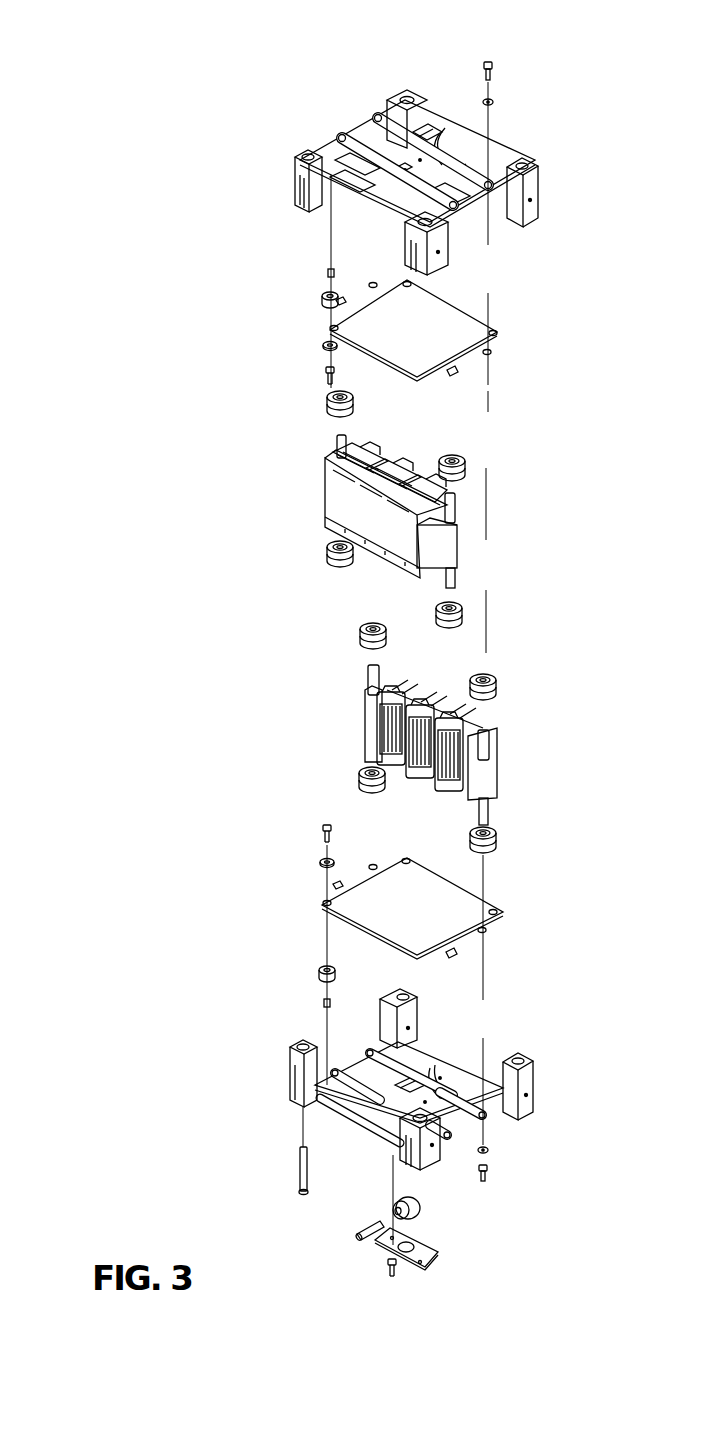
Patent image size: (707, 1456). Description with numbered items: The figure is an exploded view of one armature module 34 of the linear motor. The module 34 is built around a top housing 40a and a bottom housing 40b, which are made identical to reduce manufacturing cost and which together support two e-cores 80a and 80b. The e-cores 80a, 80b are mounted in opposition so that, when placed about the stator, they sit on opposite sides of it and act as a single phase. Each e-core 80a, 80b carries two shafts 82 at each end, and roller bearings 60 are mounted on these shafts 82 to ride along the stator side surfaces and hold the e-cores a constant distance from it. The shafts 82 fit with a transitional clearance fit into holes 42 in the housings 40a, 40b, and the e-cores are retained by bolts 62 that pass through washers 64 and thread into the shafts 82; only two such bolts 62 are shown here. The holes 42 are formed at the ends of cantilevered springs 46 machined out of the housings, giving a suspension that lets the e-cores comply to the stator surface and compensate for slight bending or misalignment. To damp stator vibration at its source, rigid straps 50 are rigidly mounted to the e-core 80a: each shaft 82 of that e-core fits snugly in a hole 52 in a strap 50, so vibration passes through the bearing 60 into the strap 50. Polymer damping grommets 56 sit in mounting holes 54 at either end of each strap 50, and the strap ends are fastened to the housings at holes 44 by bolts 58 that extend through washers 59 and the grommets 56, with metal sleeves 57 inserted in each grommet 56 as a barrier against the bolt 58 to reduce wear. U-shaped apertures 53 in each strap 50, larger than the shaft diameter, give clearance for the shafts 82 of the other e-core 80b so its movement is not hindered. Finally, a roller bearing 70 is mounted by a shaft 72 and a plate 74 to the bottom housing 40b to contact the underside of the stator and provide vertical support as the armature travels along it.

The armature module 34 is at (100, 83).
The top housing 40a is at (294, 166).
The bottom housing 40b is at (520, 1075).
The holes 42 is at (344, 134).
The holes 44 is at (408, 113).
The cantilevered springs 46 is at (440, 152).
The rigid straps 50 is at (371, 306).
The hole 52 is at (374, 282).
The U-shaped apertures 53 is at (340, 299).
The mounting holes 54 is at (411, 287).
The polymer damping grommets 56 is at (322, 298).
The metal sleeves 57 is at (327, 273).
The bolts 58 is at (326, 381).
The washers 59 is at (323, 346).
The roller bearings 60 is at (327, 403).
The bolts 62 is at (494, 67).
The washers 64 is at (494, 102).
The roller bearing 70 is at (420, 1209).
The shaft 72 is at (356, 1233).
The plate 74 is at (437, 1252).
The e-core 80a is at (366, 714).
The e-core 80b is at (322, 514).
The shafts 82 is at (336, 446).